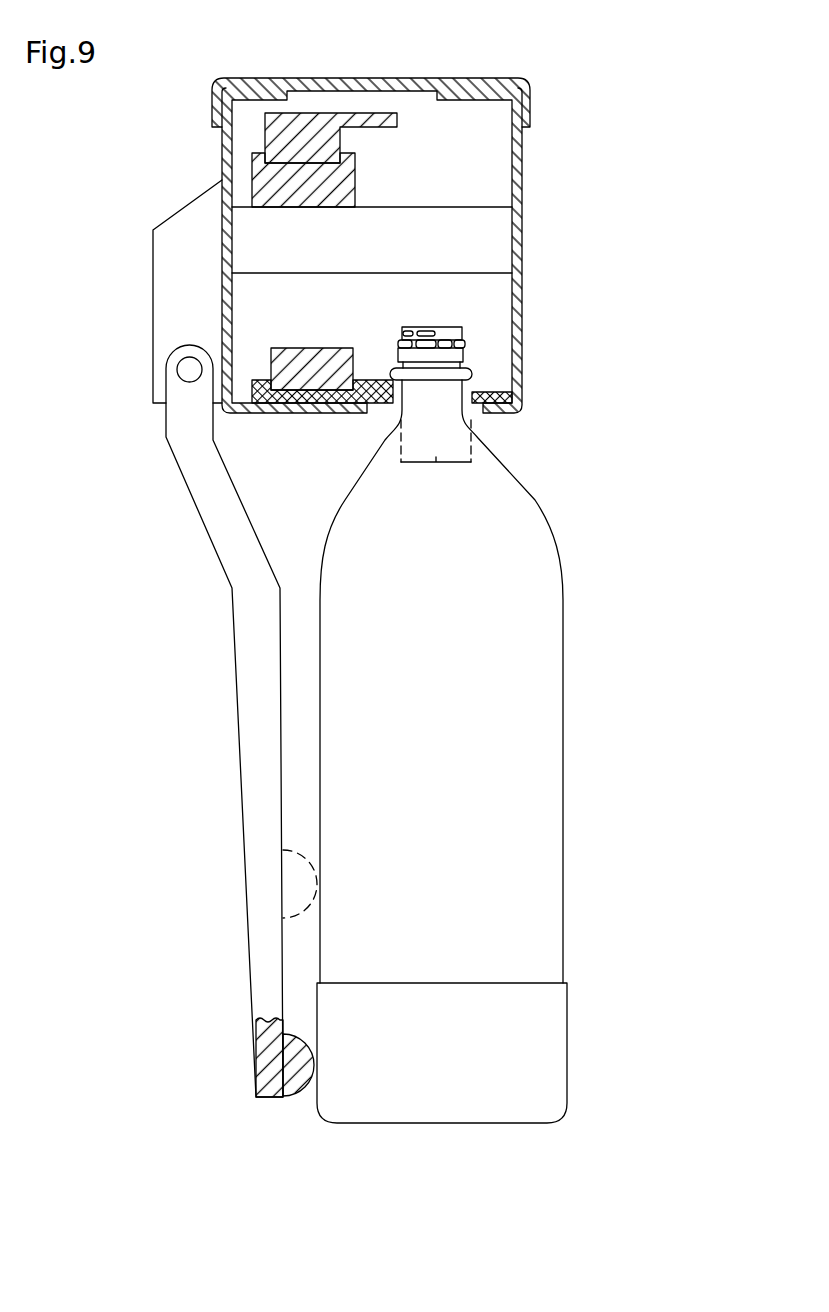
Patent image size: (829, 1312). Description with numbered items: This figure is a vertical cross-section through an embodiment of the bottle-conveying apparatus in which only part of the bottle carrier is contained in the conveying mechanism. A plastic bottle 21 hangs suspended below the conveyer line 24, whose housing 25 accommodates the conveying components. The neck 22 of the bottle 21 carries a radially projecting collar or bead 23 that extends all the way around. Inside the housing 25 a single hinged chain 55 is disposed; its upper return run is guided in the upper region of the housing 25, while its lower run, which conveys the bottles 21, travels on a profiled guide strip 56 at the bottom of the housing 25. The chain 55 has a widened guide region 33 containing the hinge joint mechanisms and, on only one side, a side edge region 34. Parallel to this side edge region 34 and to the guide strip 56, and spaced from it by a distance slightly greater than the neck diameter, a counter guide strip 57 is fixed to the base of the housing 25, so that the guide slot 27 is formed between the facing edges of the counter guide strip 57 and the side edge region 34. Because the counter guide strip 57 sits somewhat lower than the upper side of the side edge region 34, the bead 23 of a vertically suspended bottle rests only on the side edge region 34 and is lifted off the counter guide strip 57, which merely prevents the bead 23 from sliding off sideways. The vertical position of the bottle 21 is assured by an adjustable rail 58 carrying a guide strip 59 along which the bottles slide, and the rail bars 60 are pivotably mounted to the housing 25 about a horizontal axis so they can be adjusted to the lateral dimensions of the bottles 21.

The bottle 21 is at (488, 588).
The neck 22 is at (432, 423).
The collar or bead 23 is at (467, 367).
The conveyer line 24 is at (540, 140).
The housing 25 is at (515, 272).
The guide slot 27 is at (436, 456).
The widened guide region 33 is at (330, 365).
The side edge region 34 is at (363, 120).
The hinged chain 55 is at (297, 137).
The profiled guide strip 56 is at (305, 405).
The counter guide strip 57 is at (536, 392).
The rail 58 is at (234, 909).
The guide strip 59 is at (297, 1067).
The rail bars 60 is at (260, 662).